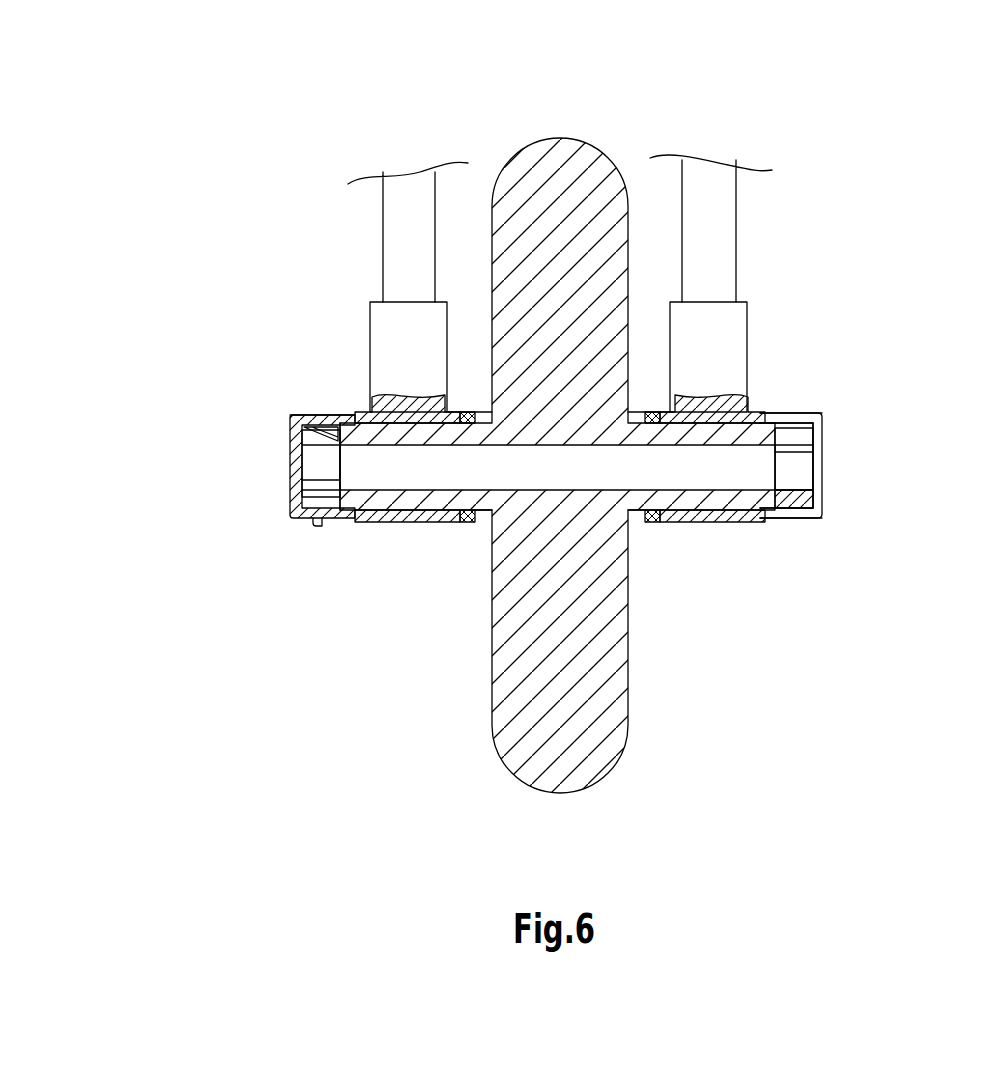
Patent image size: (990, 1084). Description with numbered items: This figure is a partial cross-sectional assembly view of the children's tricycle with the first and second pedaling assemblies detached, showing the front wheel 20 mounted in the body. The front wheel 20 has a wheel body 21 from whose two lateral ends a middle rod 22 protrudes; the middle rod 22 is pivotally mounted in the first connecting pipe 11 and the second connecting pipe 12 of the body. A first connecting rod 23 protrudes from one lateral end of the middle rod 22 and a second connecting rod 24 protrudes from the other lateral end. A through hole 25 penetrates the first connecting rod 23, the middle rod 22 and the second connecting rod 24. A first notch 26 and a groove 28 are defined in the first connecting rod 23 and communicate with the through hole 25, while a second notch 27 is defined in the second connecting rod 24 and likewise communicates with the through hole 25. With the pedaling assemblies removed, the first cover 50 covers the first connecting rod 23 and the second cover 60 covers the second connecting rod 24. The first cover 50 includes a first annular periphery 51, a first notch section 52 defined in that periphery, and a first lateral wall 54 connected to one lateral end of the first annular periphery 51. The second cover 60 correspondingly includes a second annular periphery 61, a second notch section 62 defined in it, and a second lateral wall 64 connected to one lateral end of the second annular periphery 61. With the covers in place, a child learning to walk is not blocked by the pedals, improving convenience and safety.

The front wheel 20 is at (557, 420).
The wheel body 21 is at (523, 177).
The first connecting rod 23 is at (345, 433).
The second notch 27 is at (780, 418).
The first connecting pipe 11 is at (437, 517).
The second connecting pipe 12 is at (686, 525).
The middle rod 22 is at (398, 502).
The through hole 25 is at (617, 475).
The first notch 26 is at (333, 505).
The second connecting rod 24 is at (785, 500).
The first cover 50 is at (224, 449).
The groove 28 is at (292, 417).
The first annular periphery 51 is at (327, 417).
The first notch section 52 is at (318, 520).
The first lateral wall 54 is at (297, 478).
The second cover 60 is at (866, 470).
The second annular periphery 61 is at (795, 515).
The second notch section 62 is at (797, 413).
The second lateral wall 64 is at (818, 487).